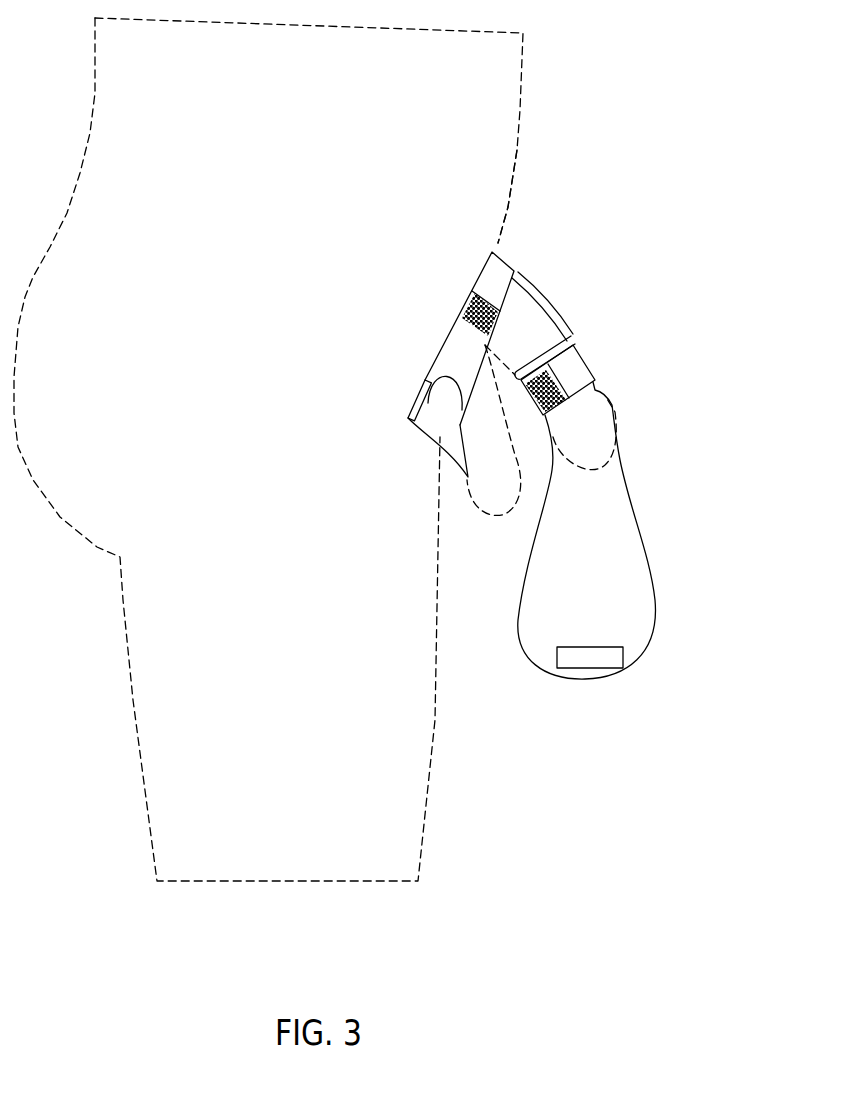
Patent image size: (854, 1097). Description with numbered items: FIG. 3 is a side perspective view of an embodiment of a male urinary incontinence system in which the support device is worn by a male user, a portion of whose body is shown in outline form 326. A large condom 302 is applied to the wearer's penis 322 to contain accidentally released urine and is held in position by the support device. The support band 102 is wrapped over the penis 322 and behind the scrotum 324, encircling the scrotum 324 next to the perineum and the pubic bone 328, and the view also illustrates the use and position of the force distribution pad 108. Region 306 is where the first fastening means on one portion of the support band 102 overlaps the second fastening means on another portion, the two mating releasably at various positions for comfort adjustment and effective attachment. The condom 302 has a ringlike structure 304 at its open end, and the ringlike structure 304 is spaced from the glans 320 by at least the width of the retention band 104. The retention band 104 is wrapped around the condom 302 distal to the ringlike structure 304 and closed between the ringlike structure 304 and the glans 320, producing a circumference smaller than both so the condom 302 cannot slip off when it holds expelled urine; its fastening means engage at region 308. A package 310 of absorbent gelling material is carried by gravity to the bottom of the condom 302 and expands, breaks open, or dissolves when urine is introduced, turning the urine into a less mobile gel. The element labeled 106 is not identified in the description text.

The support band 102 is at (444, 342).
The retention band 104 is at (528, 407).
The band 106 is at (536, 287).
The force distribution pad 108 is at (457, 463).
The condom 302 is at (636, 500).
The ringlike structure 304 is at (569, 340).
The region 306 is at (499, 279).
The region 308 is at (569, 368).
The package 310 is at (613, 645).
The glans 320 is at (597, 430).
The penis 322 is at (523, 332).
The scrotum 324 is at (490, 493).
The outline form 326 is at (521, 125).
The pubic bone 328 is at (503, 244).